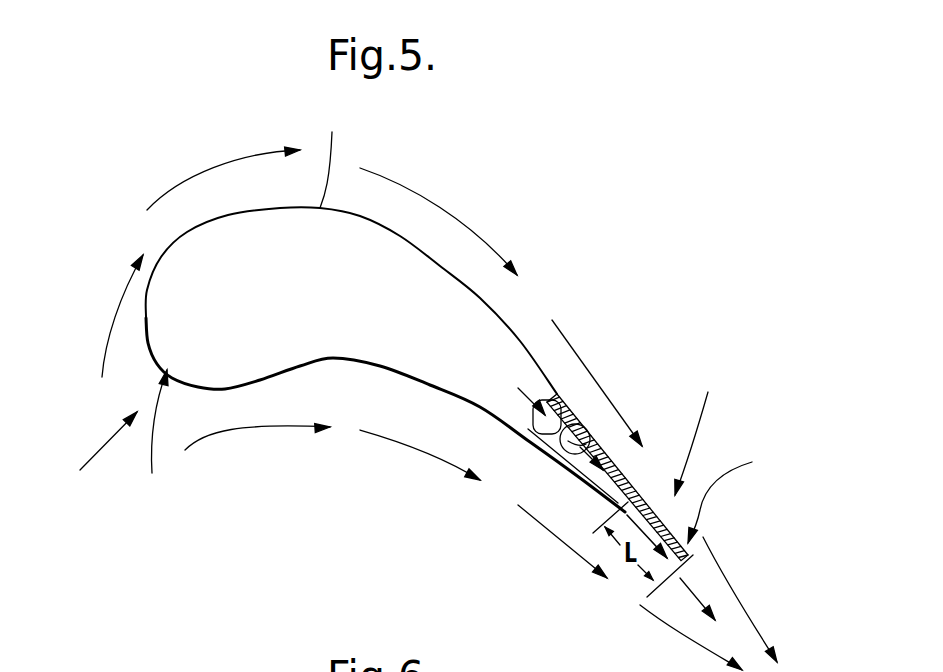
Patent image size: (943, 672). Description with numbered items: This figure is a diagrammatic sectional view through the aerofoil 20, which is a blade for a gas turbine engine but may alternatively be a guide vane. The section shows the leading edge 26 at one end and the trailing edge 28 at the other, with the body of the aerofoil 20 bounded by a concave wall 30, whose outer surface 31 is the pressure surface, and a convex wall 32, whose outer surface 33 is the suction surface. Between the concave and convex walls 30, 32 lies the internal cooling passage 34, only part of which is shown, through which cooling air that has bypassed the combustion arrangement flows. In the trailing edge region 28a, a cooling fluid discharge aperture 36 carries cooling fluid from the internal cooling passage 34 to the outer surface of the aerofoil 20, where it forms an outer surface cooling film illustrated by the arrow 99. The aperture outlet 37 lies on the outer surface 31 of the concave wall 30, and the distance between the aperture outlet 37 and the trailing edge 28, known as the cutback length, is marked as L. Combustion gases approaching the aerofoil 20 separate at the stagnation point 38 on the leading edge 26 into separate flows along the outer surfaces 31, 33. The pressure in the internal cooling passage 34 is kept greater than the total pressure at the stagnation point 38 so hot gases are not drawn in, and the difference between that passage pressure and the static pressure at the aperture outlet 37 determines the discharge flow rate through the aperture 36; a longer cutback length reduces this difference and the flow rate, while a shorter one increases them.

The aerofoil 20 is at (303, 308).
The leading edge 26 is at (175, 252).
The trailing edge 28 is at (736, 494).
The trailing edge region 28a is at (697, 508).
The concave wall 30 is at (350, 360).
The outer surface of the concave wall 31 is at (463, 400).
The convex wall 32 is at (330, 156).
The outer surface of the convex wall 33 is at (503, 323).
The internal cooling passage 34 is at (558, 450).
The cooling fluid discharge apertures 36 is at (628, 495).
The aperture outlet 37 is at (613, 512).
The stagnation point 38 is at (124, 377).
The arrow illustrating outer surface cooling film 99 is at (699, 428).